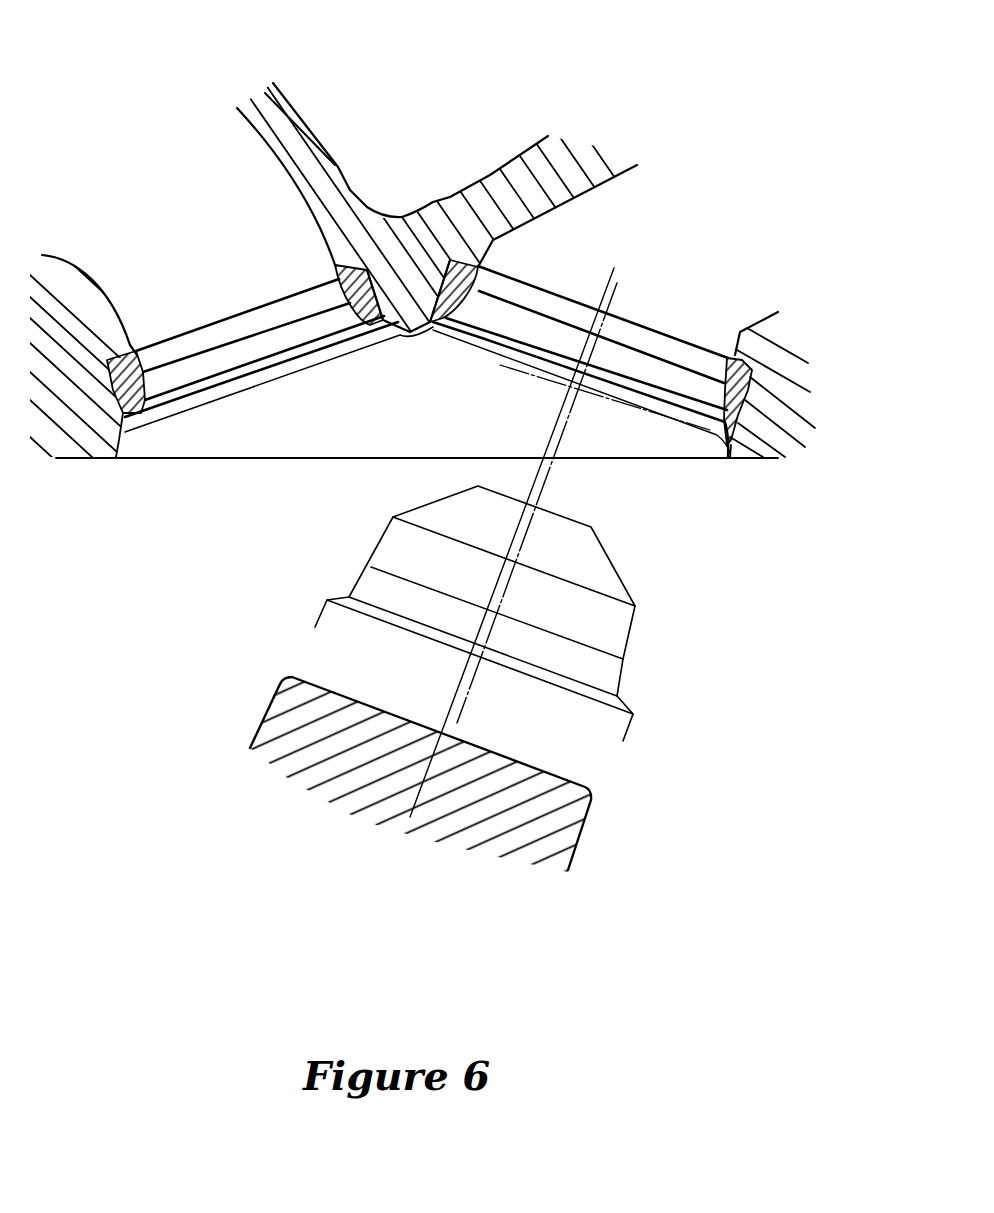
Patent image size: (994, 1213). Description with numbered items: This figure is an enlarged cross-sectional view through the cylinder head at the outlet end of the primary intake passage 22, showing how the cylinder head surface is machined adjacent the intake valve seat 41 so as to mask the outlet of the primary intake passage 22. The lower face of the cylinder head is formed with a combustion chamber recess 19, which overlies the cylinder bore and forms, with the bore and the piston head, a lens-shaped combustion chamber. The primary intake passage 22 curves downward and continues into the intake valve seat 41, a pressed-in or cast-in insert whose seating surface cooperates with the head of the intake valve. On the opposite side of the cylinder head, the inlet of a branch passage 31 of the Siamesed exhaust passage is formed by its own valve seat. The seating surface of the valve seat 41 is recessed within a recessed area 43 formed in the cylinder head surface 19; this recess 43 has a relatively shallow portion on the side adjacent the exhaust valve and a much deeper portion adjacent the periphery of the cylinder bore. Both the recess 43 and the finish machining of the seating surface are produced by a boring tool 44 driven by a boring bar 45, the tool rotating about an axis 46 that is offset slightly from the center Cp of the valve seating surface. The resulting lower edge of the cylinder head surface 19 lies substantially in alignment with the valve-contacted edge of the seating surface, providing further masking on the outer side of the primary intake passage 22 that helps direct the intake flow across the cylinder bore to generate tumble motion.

The combustion chamber recess 19 is at (300, 440).
The primary intake passage 22 is at (672, 205).
The branch passage 31 is at (182, 193).
The intake valve seat 41 is at (738, 397).
The recessed area 43 is at (520, 367).
The boring tool 44 is at (645, 617).
The boring bar 45 is at (591, 803).
The axis 46 is at (455, 700).
The center of the valve seating surface Cp is at (548, 482).